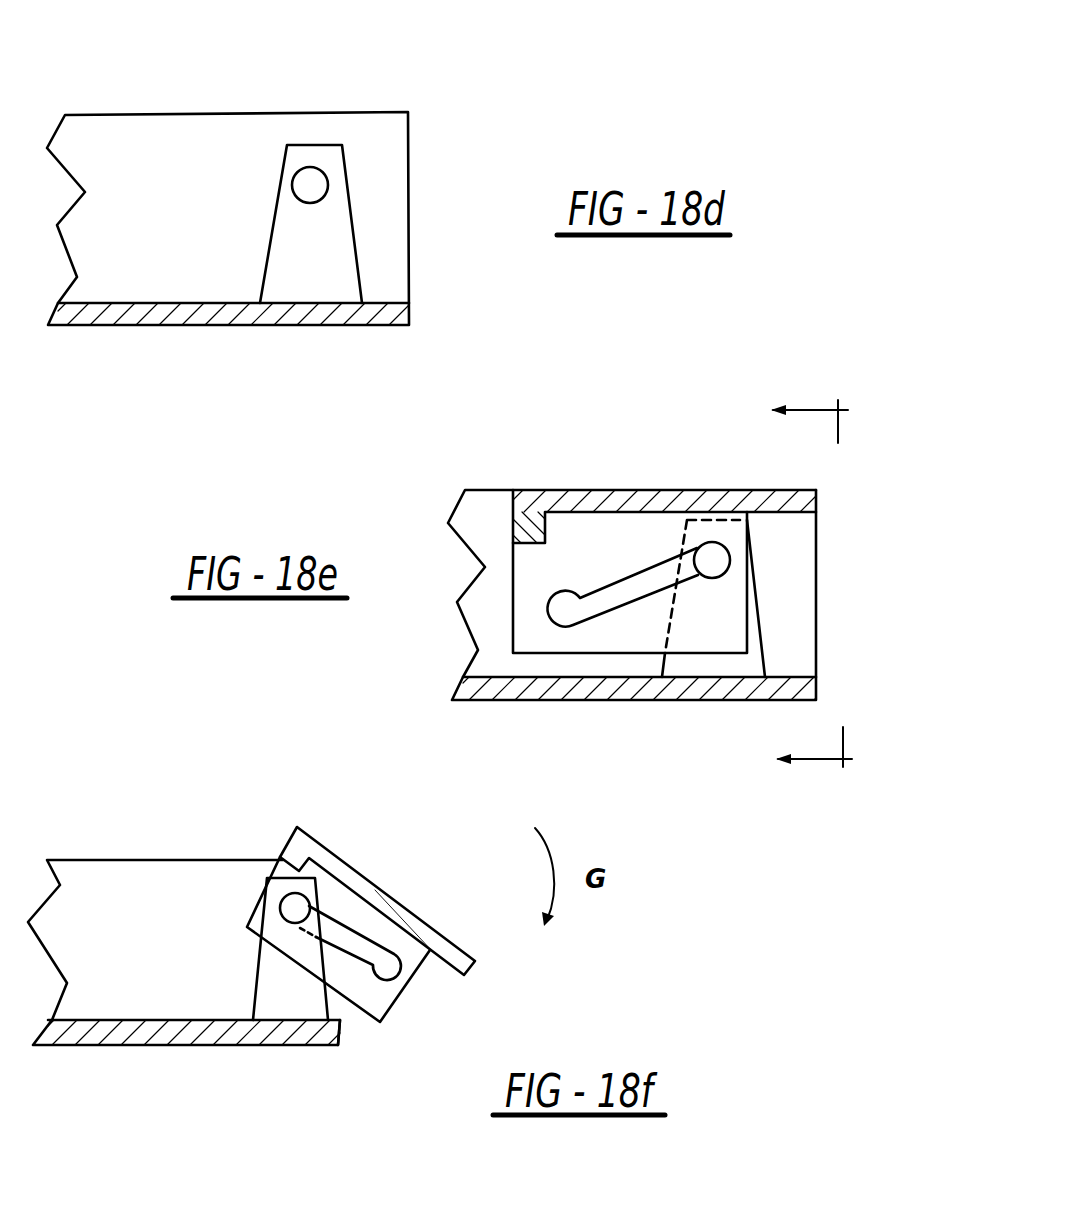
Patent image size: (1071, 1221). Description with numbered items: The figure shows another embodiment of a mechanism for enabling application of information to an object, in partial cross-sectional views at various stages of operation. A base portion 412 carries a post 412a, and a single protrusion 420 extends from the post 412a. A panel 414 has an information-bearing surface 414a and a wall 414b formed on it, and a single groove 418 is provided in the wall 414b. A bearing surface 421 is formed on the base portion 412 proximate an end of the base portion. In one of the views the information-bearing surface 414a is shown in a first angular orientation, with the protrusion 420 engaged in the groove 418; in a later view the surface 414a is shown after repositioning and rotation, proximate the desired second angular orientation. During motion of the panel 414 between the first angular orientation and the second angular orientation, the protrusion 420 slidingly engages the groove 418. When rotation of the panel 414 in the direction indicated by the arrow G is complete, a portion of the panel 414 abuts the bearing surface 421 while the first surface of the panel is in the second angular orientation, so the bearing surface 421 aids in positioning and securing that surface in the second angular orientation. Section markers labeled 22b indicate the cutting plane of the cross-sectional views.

In FIG. 18D, the base portion 412 is at (215, 313).
In FIG. 18E, the base portion 412 is at (578, 700).
In FIG. 18F, the base portion 412 is at (135, 1045).
In FIG. 18D, the post 412a is at (327, 242).
In FIG. 18E, the post 412a is at (753, 662).
In FIG. 18F, the post 412a is at (271, 980).
In FIG. 18F, the panel 414 is at (293, 831).
In FIG. 18E, the information-bearing surface 414a is at (698, 490).
In FIG. 18F, the information-bearing surface 414a is at (337, 857).
In FIG. 18E, the wall 414b is at (478, 628).
In FIG. 18E, the groove 418 is at (618, 580).
In FIG. 18D, the protrusion 420 is at (310, 185).
In FIG. 18E, the protrusion 420 is at (712, 560).
In FIG. 18F, the bearing surface 421 is at (341, 1013).
In FIG. 18E, the section line 22b is at (830, 582).